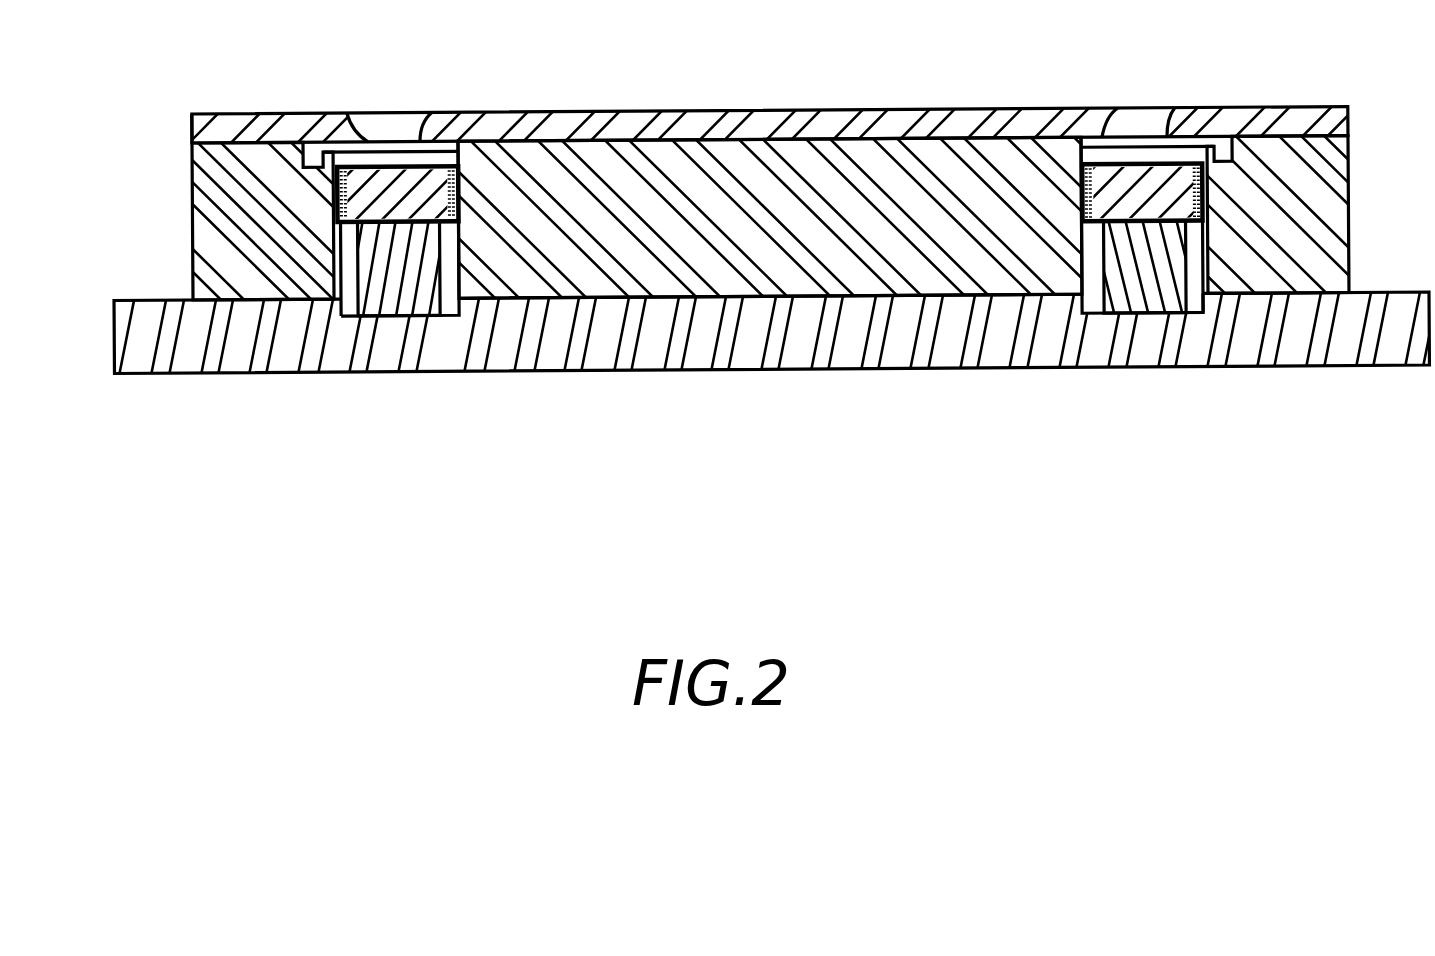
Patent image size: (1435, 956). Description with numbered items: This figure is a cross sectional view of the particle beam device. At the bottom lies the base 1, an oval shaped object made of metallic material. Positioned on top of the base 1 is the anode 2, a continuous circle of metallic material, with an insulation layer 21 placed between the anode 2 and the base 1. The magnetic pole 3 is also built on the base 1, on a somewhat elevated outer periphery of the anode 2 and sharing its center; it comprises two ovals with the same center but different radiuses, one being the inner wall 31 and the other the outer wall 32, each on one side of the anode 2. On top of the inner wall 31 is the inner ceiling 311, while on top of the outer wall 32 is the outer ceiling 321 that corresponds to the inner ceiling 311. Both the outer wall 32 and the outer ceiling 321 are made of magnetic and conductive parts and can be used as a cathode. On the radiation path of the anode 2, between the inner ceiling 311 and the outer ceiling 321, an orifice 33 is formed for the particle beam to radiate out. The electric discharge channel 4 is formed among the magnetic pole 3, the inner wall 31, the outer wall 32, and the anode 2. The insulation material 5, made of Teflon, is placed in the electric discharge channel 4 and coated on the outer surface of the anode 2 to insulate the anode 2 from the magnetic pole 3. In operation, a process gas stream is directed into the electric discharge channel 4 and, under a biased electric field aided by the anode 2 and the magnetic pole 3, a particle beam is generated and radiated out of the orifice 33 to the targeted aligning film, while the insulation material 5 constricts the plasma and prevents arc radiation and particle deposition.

The base 1 is at (177, 345).
The anode 2 is at (380, 168).
The insulation layer 21 is at (380, 277).
The magnetic pole 3 is at (727, 191).
The inner wall 31 is at (883, 158).
The inner ceiling 311 is at (637, 123).
The outer wall 32 is at (286, 267).
The outer ceiling 321 is at (218, 132).
The orifice 33 is at (383, 123).
The electric discharge channel 4 is at (449, 270).
The insulation material 5 is at (338, 190).